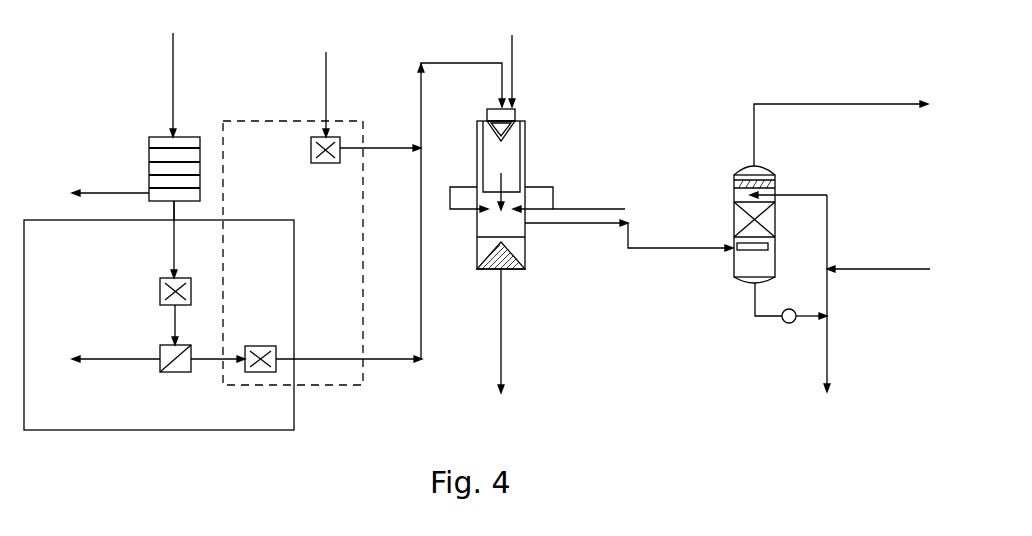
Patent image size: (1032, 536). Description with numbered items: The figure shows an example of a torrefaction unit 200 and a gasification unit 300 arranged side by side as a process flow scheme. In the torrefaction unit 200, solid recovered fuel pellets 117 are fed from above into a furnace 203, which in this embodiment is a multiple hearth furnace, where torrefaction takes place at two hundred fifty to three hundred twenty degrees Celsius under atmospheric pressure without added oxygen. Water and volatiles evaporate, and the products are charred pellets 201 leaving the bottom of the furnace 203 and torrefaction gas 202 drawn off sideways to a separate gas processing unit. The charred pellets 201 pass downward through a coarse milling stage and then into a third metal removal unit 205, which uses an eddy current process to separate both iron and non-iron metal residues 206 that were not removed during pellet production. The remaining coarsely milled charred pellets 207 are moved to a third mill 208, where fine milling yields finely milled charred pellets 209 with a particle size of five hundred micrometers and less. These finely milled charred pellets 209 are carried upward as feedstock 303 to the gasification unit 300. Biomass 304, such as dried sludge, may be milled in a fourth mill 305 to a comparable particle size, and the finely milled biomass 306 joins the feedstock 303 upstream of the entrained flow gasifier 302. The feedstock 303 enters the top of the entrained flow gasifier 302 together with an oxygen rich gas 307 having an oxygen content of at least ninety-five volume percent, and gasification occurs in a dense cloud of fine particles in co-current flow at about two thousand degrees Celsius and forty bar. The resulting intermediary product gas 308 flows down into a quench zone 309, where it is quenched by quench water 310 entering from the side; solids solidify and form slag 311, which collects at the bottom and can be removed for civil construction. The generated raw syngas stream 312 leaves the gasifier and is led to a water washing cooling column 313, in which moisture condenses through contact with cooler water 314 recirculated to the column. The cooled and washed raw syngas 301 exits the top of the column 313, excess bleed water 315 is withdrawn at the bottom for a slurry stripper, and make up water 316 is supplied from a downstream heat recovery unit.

The solid recovered fuel pellets 117 is at (177, 87).
The torrefaction unit 200 is at (118, 48).
The charred pellets 201 is at (177, 215).
The torrefaction gas 202 is at (108, 193).
The furnace 203 is at (149, 155).
The third metal removal unit 205 is at (175, 373).
The metal residues 206 is at (115, 362).
The coarsely milled charred pellets 207 is at (208, 362).
The third mill 208 is at (260, 346).
The finely milled charred pellets 209 is at (328, 362).
The gasification unit 300 is at (608, 57).
The cooled and washed raw syngas 301 is at (895, 108).
The entrained flow gasifier 302 is at (522, 153).
The feedstock 303 is at (453, 73).
The biomass 304 is at (328, 85).
The fourth mill 305 is at (328, 163).
The finely milled biomass 306 is at (392, 152).
The oxygen rich gas 307 is at (513, 58).
The intermediary product gas 308 is at (503, 187).
The quench zone 309 is at (478, 218).
The quench water 310 is at (605, 208).
The slag 311 is at (517, 255).
The raw syngas stream 312 is at (593, 228).
The water washing cooling column 313 is at (732, 260).
The water 314 is at (828, 240).
The excess bleed water 315 is at (828, 353).
The make up water 316 is at (895, 272).